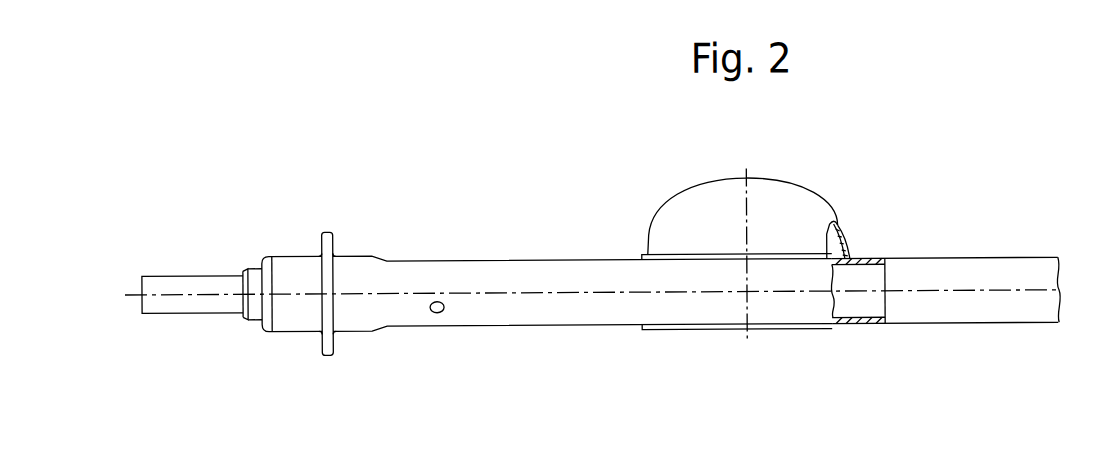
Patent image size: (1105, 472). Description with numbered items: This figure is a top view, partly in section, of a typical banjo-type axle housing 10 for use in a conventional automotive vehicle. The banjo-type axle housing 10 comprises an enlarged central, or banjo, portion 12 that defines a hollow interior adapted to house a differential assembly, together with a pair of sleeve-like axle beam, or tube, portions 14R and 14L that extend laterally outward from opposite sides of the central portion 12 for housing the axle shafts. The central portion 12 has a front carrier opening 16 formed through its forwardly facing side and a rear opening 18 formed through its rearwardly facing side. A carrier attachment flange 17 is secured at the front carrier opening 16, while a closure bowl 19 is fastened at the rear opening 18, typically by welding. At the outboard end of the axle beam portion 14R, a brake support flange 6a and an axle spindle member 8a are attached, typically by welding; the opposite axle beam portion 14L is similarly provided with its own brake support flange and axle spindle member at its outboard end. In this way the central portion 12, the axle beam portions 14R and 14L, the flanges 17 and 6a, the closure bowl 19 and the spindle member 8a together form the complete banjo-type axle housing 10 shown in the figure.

The banjo-type axle housing 10 is at (868, 231).
The axle spindle member 8a is at (192, 318).
The brake support flange 6a is at (326, 359).
The axle beam portion 14R is at (522, 304).
The axle beam portion 14L is at (975, 303).
The carrier attachment flange 17 is at (665, 333).
The central portion 12 is at (717, 306).
The closure bowl 19 is at (708, 189).
The rear opening 18 is at (832, 269).
The front carrier opening 16 is at (832, 321).